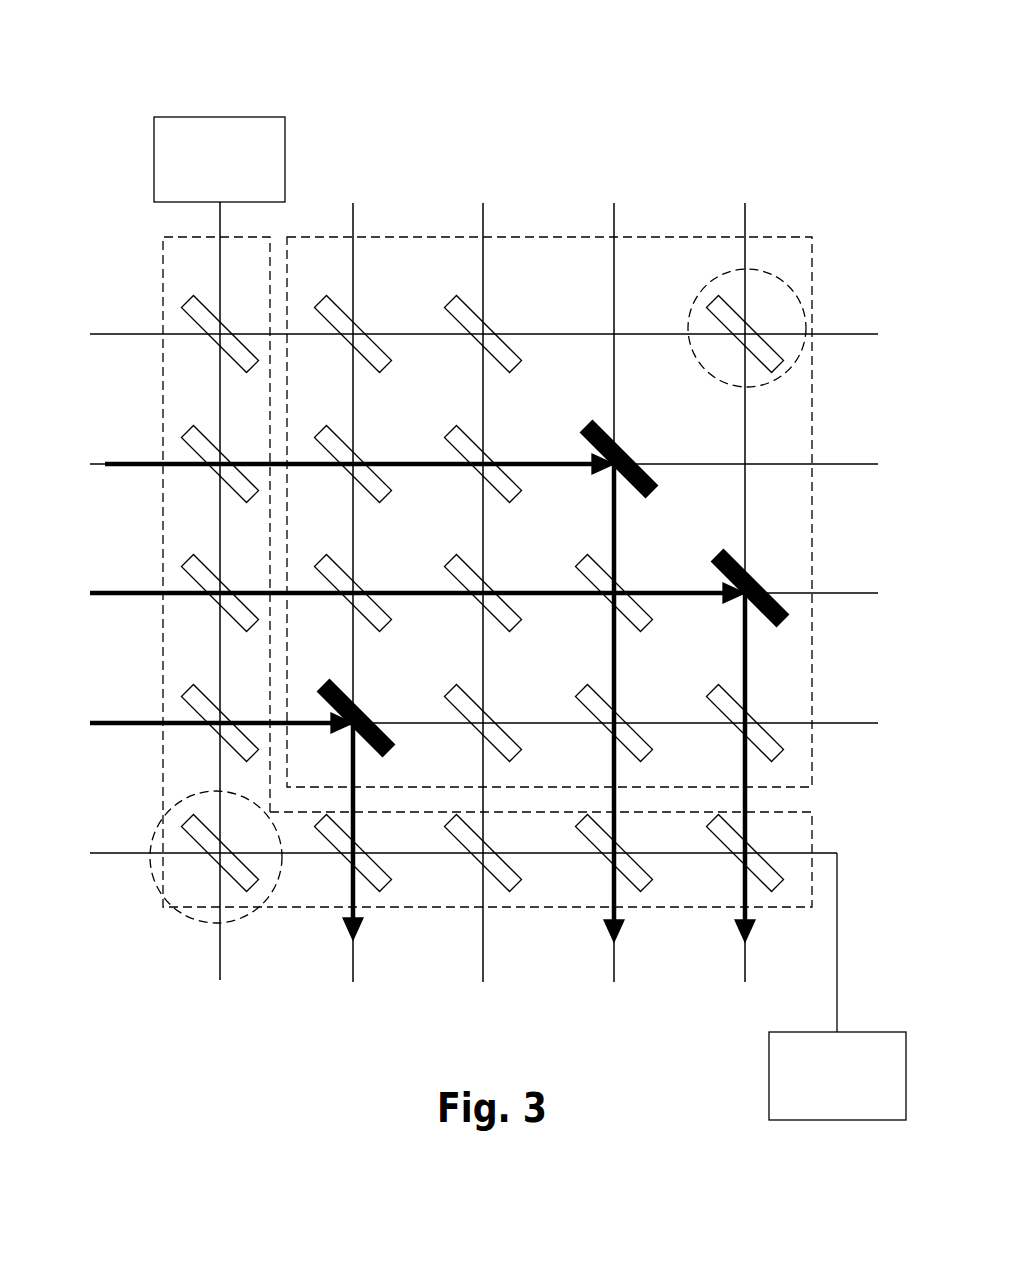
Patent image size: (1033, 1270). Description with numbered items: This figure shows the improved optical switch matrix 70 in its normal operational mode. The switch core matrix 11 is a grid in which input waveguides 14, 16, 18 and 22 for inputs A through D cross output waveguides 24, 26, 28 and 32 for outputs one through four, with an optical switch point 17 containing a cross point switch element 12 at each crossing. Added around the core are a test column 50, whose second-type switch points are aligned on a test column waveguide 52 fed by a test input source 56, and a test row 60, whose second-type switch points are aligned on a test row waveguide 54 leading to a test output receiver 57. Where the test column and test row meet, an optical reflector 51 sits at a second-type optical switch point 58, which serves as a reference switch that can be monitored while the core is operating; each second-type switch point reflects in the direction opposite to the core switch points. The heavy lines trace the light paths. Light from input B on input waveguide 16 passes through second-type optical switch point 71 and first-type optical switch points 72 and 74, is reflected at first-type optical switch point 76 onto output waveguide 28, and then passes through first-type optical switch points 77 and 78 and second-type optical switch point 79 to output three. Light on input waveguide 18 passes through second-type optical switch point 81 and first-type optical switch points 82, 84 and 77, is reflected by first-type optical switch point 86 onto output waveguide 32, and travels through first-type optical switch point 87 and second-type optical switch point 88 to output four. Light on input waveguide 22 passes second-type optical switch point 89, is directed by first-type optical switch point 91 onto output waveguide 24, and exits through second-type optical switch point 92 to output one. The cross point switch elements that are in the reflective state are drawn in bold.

The improved optical switch matrix 70 is at (240, 53).
The switch core matrix 11 is at (386, 175).
The cross point switch element 12 is at (461, 297).
The input waveguide 14 is at (123, 338).
The input waveguide 16 is at (126, 468).
The optical switch point 17 is at (794, 265).
The input waveguide 18 is at (114, 597).
The input waveguide 22 is at (123, 727).
The output waveguide 24 is at (352, 954).
The output waveguide 26 is at (482, 954).
The output waveguide 28 is at (612, 955).
The output waveguide 32 is at (742, 956).
The test column 50 is at (175, 269).
The optical reflector 51 is at (207, 865).
The test column waveguide 52 is at (221, 303).
The test row waveguide 54 is at (308, 855).
The test input source 56 is at (189, 145).
The test output receiver 57 is at (804, 1063).
The second-type optical switch point 58 is at (185, 857).
The test row 60 is at (781, 908).
The second-type optical switch point 71 is at (240, 449).
The first-type optical switch point 72 is at (337, 478).
The first-type optical switch point 74 is at (470, 478).
The first-type optical switch point 76 is at (600, 478).
The first-type optical switch point 77 is at (598, 607).
The first-type optical switch point 78 is at (600, 735).
The second-type optical switch point 79 is at (632, 843).
The second-type optical switch point 81 is at (235, 581).
The first-type optical switch point 82 is at (338, 605).
The first-type optical switch point 84 is at (472, 605).
The first-type optical switch point 86 is at (729, 607).
The first-type optical switch point 87 is at (728, 735).
The second-type optical switch point 88 is at (760, 846).
The second-type optical switch point 89 is at (233, 707).
The first-type optical switch point 91 is at (334, 740).
The second-type optical switch point 92 is at (372, 843).